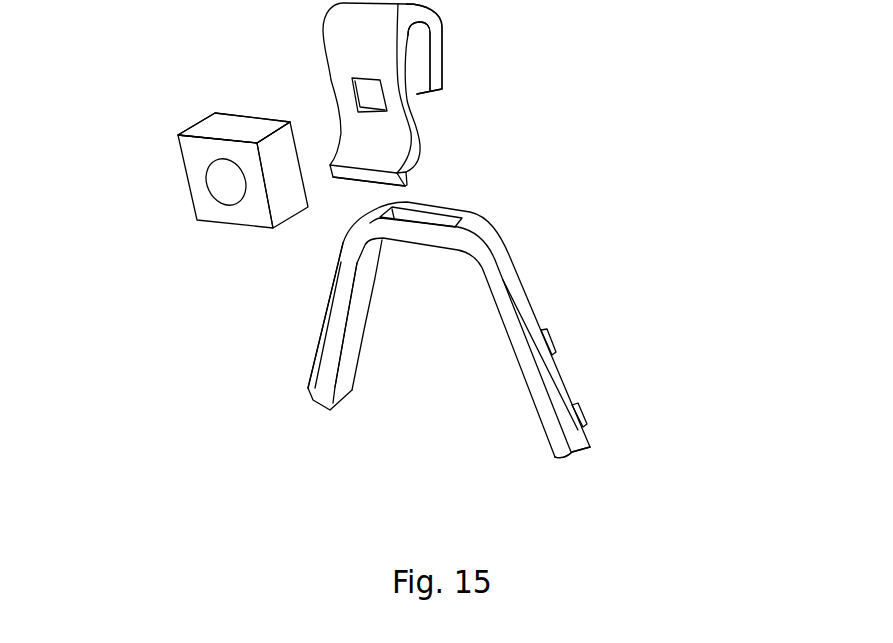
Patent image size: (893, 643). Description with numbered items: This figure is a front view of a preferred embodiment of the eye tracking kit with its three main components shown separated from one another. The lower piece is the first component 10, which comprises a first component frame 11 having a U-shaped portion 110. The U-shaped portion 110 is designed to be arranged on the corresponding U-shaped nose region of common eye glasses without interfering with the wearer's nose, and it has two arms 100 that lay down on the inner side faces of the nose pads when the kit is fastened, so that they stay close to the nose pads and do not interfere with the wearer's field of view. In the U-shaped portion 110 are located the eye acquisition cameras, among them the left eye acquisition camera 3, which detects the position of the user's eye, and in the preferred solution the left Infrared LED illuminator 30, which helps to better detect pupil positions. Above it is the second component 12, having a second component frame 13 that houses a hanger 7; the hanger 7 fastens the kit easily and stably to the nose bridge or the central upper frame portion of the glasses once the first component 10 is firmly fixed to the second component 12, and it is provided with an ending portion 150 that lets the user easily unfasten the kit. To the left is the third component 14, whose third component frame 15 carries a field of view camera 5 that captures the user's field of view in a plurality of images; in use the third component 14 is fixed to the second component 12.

The third component 14 is at (182, 120).
The third component frame 15 is at (255, 127).
The field of view camera 5 is at (225, 183).
The hanger 7 is at (430, 62).
The second component 12 is at (478, 157).
The second component frame 13 is at (415, 170).
The ending portion 150 is at (411, 184).
The first component frame 11 is at (340, 317).
The first component 10 is at (277, 328).
The U-shaped portion 110 is at (343, 355).
The arms 100 is at (553, 418).
The left eye acquisition camera 3 is at (567, 333).
The left Infrared LED illuminator 30 is at (595, 413).